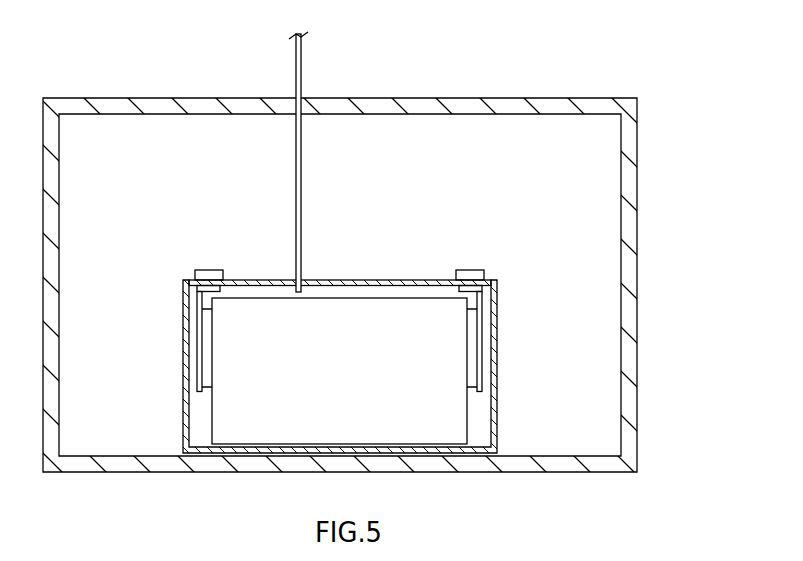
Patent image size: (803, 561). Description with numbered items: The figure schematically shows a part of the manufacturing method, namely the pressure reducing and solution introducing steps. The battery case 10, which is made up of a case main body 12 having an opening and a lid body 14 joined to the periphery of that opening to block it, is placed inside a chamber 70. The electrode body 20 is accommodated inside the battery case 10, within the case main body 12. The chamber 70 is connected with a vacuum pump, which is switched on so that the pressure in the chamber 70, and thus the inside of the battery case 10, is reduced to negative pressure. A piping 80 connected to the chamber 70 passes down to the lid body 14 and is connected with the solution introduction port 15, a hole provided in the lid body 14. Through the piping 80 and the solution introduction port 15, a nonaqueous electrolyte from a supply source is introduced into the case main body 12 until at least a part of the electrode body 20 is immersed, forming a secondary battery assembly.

The chamber 70 is at (642, 146).
The battery case 10 is at (378, 328).
The case main body 12 is at (497, 326).
The lid body 14 is at (428, 280).
The solution introduction port 15 is at (303, 281).
The electrode body 20 is at (471, 419).
The piping 80 is at (304, 57).